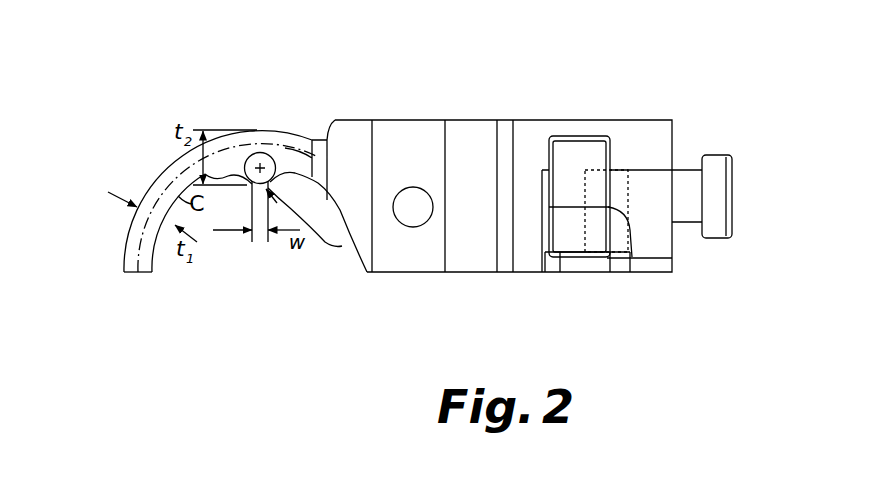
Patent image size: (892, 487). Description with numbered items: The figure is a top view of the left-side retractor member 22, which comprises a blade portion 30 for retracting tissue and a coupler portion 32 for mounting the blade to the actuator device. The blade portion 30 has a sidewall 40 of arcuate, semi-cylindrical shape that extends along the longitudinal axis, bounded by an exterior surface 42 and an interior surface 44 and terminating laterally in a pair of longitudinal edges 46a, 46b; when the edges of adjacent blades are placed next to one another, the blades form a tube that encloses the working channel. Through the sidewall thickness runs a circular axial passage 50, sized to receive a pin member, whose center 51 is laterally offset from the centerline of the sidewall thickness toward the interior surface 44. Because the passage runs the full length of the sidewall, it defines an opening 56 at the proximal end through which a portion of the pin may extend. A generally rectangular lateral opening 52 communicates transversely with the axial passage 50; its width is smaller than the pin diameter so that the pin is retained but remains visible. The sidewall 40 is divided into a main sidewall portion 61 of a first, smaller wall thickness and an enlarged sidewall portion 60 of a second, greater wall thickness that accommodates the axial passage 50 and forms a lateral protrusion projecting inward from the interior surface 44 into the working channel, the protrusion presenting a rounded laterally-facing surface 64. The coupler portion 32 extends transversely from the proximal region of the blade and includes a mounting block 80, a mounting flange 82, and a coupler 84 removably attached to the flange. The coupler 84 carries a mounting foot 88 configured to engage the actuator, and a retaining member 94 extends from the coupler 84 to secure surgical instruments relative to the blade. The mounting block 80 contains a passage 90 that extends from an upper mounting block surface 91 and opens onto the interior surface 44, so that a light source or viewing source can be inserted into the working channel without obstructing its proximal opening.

The retractor member 22 is at (652, 100).
The blade portion 30 is at (127, 142).
The coupler portion 32 is at (705, 262).
The sidewall 40 is at (135, 237).
The exterior surface 42 is at (158, 177).
The interior surface 44 is at (158, 243).
The longitudinal edge 46a is at (142, 273).
The longitudinal edge 46b is at (382, 275).
The axial passage 50 is at (266, 147).
The center of the axial passage 51 is at (251, 158).
The lateral opening 52 is at (311, 231).
The opening 56 is at (288, 147).
The enlarged sidewall portion 60 is at (284, 184).
The main sidewall portion 61 is at (170, 160).
The laterally-facing surface 64 is at (243, 187).
The mounting block 80 is at (430, 265).
The mounting flange 82 is at (635, 125).
The coupler 84 is at (653, 243).
The mounting foot 88 is at (720, 190).
The passage 90 is at (415, 207).
The upper mounting block surface 91 is at (430, 142).
The retaining member 94 is at (577, 153).